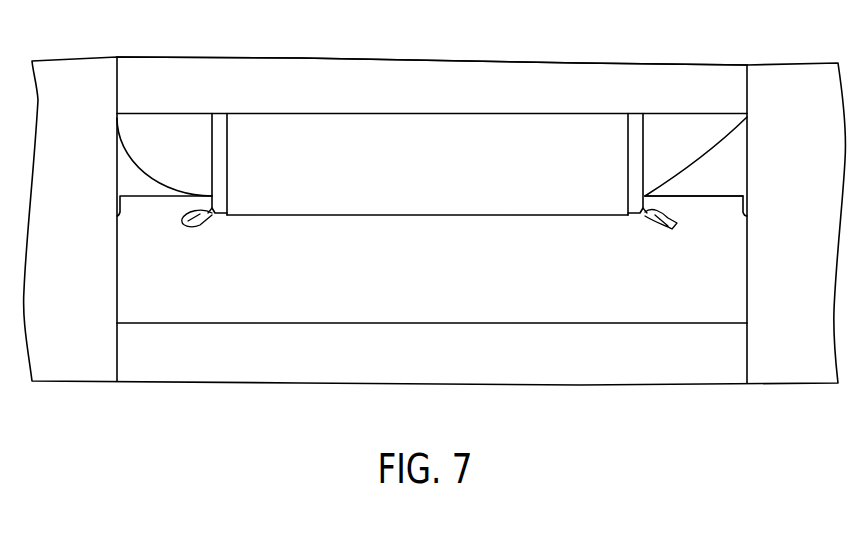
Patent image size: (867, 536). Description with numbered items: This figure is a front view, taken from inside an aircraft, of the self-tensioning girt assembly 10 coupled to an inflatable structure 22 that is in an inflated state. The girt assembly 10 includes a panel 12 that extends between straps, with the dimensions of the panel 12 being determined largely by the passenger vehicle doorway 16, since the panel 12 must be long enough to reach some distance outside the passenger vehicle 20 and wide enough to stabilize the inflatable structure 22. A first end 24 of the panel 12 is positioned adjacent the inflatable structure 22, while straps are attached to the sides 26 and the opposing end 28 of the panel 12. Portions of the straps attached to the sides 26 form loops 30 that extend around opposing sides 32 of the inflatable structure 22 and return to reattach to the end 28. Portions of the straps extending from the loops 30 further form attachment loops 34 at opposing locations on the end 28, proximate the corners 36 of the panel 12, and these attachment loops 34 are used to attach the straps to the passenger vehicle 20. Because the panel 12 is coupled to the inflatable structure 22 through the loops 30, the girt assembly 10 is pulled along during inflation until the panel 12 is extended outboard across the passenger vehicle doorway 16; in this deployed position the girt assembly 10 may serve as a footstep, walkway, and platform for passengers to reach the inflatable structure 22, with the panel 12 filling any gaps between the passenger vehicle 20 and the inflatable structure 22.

The self-tensioning girt assembly 10 is at (206, 121).
The panel 12 is at (363, 128).
The passenger vehicle doorway 16 is at (733, 175).
The passenger vehicle 20 is at (775, 372).
The inflatable structure 22 is at (663, 148).
The first end 24 is at (522, 113).
The sides 26 is at (212, 167).
The opposing end 28 is at (467, 218).
The loop 30 is at (218, 165).
The opposing sides 32 is at (142, 120).
The attachment loop 34 is at (192, 227).
The corner 36 is at (225, 216).